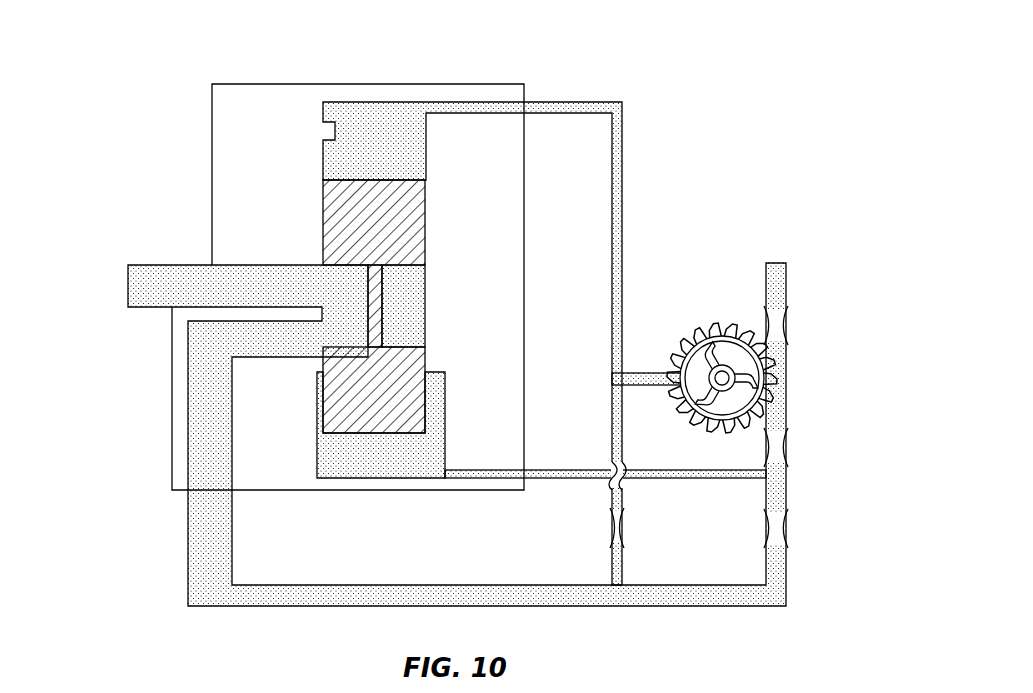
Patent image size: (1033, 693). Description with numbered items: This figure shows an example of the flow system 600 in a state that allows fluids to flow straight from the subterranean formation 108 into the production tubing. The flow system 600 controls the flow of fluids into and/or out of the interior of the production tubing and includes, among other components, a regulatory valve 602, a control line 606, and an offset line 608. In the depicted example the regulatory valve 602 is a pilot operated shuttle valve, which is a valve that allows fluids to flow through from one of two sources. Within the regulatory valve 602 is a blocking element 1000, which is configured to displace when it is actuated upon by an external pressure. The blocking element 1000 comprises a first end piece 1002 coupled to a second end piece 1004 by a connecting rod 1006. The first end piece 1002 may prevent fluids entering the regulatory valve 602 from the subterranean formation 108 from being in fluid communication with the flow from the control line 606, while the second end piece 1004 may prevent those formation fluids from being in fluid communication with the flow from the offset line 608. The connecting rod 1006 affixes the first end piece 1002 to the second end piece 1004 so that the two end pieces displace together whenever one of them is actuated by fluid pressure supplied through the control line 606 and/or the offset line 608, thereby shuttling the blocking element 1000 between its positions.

The flow system 600 is at (416, 308).
The regulatory valve 602 is at (239, 84).
The control line 606 is at (622, 183).
The offset line 608 is at (693, 478).
The subterranean formation 108 is at (80, 297).
The blocking element 1000 is at (279, 276).
The first end piece 1002 is at (322, 222).
The second end piece 1004 is at (323, 397).
The connecting rod 1006 is at (367, 338).